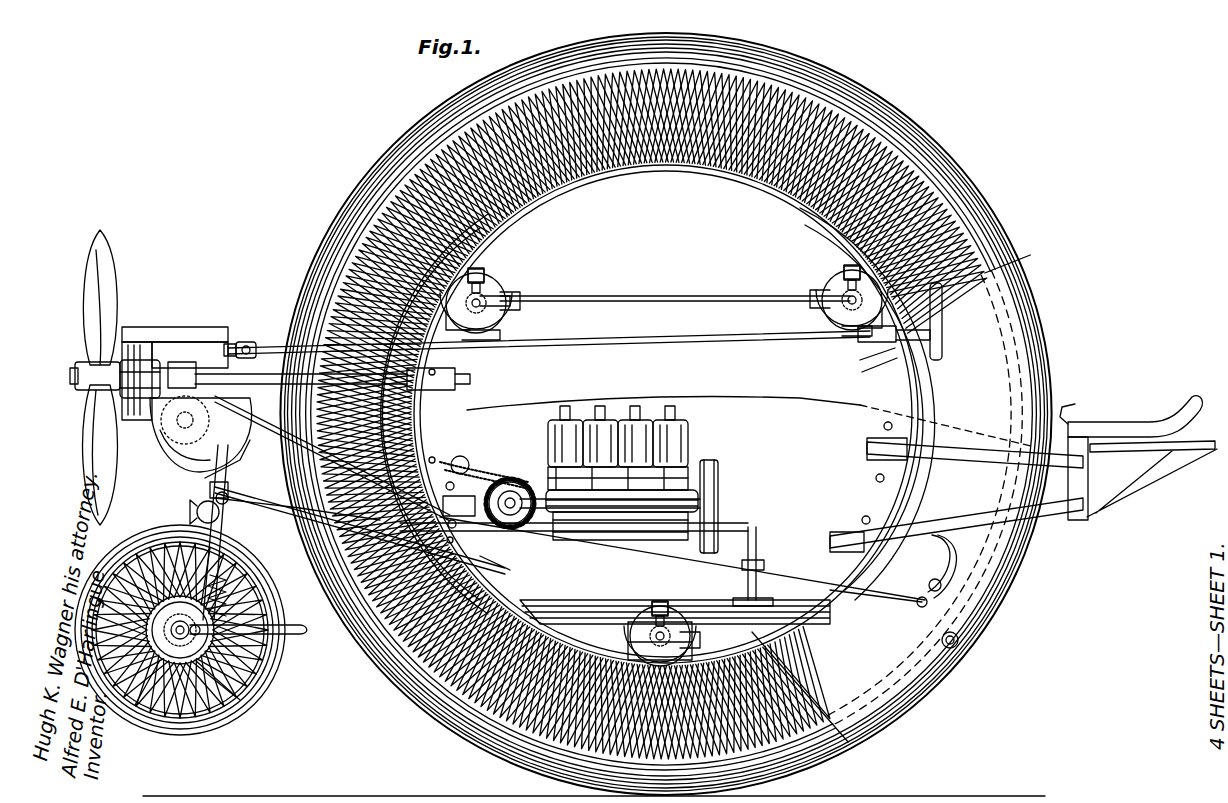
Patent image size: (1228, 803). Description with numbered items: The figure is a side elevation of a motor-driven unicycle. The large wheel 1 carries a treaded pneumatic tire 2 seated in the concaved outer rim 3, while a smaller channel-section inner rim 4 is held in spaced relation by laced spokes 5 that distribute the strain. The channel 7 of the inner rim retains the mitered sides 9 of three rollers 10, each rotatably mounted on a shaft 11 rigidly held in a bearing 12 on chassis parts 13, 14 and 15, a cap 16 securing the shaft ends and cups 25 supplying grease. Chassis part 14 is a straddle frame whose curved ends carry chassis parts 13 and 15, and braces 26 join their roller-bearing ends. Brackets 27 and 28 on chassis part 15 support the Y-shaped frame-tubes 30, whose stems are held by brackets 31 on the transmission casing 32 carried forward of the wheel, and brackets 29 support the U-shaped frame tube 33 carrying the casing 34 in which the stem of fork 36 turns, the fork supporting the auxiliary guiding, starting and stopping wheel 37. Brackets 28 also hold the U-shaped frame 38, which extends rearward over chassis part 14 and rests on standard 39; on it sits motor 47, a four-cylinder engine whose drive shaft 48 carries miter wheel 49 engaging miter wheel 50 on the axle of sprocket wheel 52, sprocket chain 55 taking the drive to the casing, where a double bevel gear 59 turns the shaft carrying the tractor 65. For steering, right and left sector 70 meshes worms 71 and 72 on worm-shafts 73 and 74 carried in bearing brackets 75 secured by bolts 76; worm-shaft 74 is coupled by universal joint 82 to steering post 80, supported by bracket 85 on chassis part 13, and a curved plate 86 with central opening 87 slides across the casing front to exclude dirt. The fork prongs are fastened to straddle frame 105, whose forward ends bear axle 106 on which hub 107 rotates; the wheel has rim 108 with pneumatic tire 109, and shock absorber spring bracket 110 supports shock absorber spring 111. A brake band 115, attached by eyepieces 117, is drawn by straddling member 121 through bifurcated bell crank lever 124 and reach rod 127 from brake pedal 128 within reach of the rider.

The wheel 1 is at (974, 190).
The treaded pneumatic tire 2 is at (905, 155).
The concaved outer rim 3 is at (875, 130).
The inner rim 4 is at (663, 595).
The spokes 5 is at (797, 99).
The channel 7 is at (780, 200).
The mitered sides 9 is at (505, 299).
The rollers 10 is at (468, 295).
The shaft 11 is at (508, 312).
The bearing 12 is at (482, 340).
The chassis part 13 is at (879, 388).
The chassis part 14 is at (560, 606).
The chassis part 15 is at (442, 443).
The cap 16 is at (548, 298).
The cups 25 is at (476, 270).
The tubes or members 26 is at (680, 295).
The bracket 27 is at (455, 385).
The bracket 28 is at (516, 487).
The bracket 29 is at (518, 560).
The Y-shaped frame-tubes 30 is at (262, 342).
The brackets 31 is at (182, 372).
The transmission casing 32 is at (153, 334).
The U-shaped frame tube 33 is at (282, 518).
The casing 34 is at (204, 497).
The fork 36 is at (196, 515).
The auxiliary wheel 37 is at (90, 569).
The U-shaped frame 38 is at (756, 524).
The standard 39 is at (764, 565).
The motor 47 is at (690, 437).
The drive shaft 48 is at (716, 505).
The miter wheel 49 is at (485, 518).
The miter wheel 50 is at (530, 465).
The sprocket wheel 52 is at (470, 465).
The sprocket chain 55 is at (230, 502).
The double bevel gear 59 is at (184, 434).
The tractor 65 is at (91, 268).
The right and left sector 70 is at (844, 529).
The worm 71 is at (1000, 465).
The worm 72 is at (1130, 497).
The worm-shaft 73 is at (1145, 425).
The worm-shaft 74 is at (232, 342).
The bearing brackets 75 is at (996, 596).
The bolts 76 is at (960, 645).
The steering post 80 is at (580, 342).
The universal joint 82 is at (246, 340).
The bracket 85 is at (865, 365).
The curved plate 86 is at (130, 385).
The central opening 87 is at (944, 338).
The straddle frame 105 is at (300, 638).
The axle 106 is at (180, 714).
The hub 107 is at (250, 700).
The rim 108 is at (232, 592).
The pneumatic tire 109 is at (106, 540).
The shock absorber spring bracket 110 is at (262, 680).
The shock absorber spring 111 is at (268, 655).
The brake band 115 is at (132, 722).
The eyepieces 117 is at (232, 712).
The straddling member 121 is at (200, 506).
The bifurcated bell crank lever 124 is at (212, 484).
The reach rod 127 is at (870, 608).
The brake pedal 128 is at (937, 552).